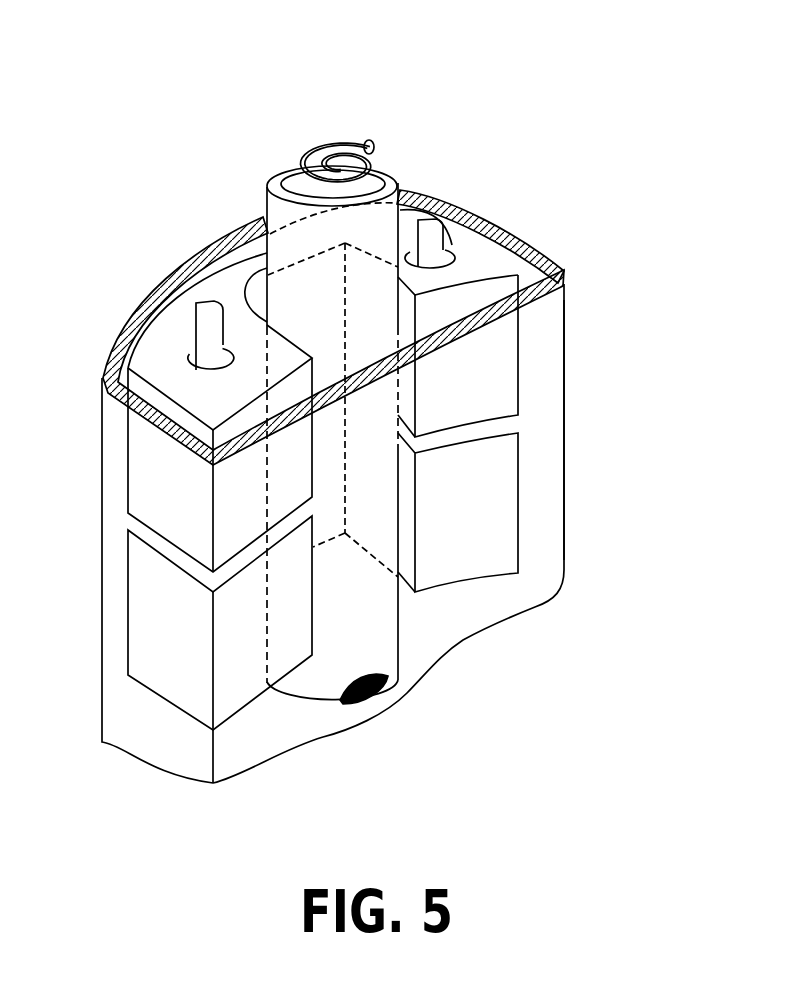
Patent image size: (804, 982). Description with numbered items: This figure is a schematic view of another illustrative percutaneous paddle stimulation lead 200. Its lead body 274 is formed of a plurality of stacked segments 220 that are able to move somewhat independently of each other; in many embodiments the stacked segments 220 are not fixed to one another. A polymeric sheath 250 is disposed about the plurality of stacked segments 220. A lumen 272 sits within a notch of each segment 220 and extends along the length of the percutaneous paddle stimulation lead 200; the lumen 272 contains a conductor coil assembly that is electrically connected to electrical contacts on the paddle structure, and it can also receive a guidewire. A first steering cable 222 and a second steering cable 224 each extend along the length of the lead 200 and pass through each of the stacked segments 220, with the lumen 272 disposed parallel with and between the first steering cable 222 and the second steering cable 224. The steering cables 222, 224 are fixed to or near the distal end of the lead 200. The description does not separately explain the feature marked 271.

The percutaneous paddle stimulation lead 200 is at (490, 88).
The stacked segments 220 is at (140, 483).
The first steering cable 222 is at (196, 332).
The second steering cable 224 is at (433, 250).
The polymeric sheath 250 is at (548, 270).
The opening 271 is at (345, 703).
The lumen 272 is at (435, 689).
The lead body 274 is at (626, 368).